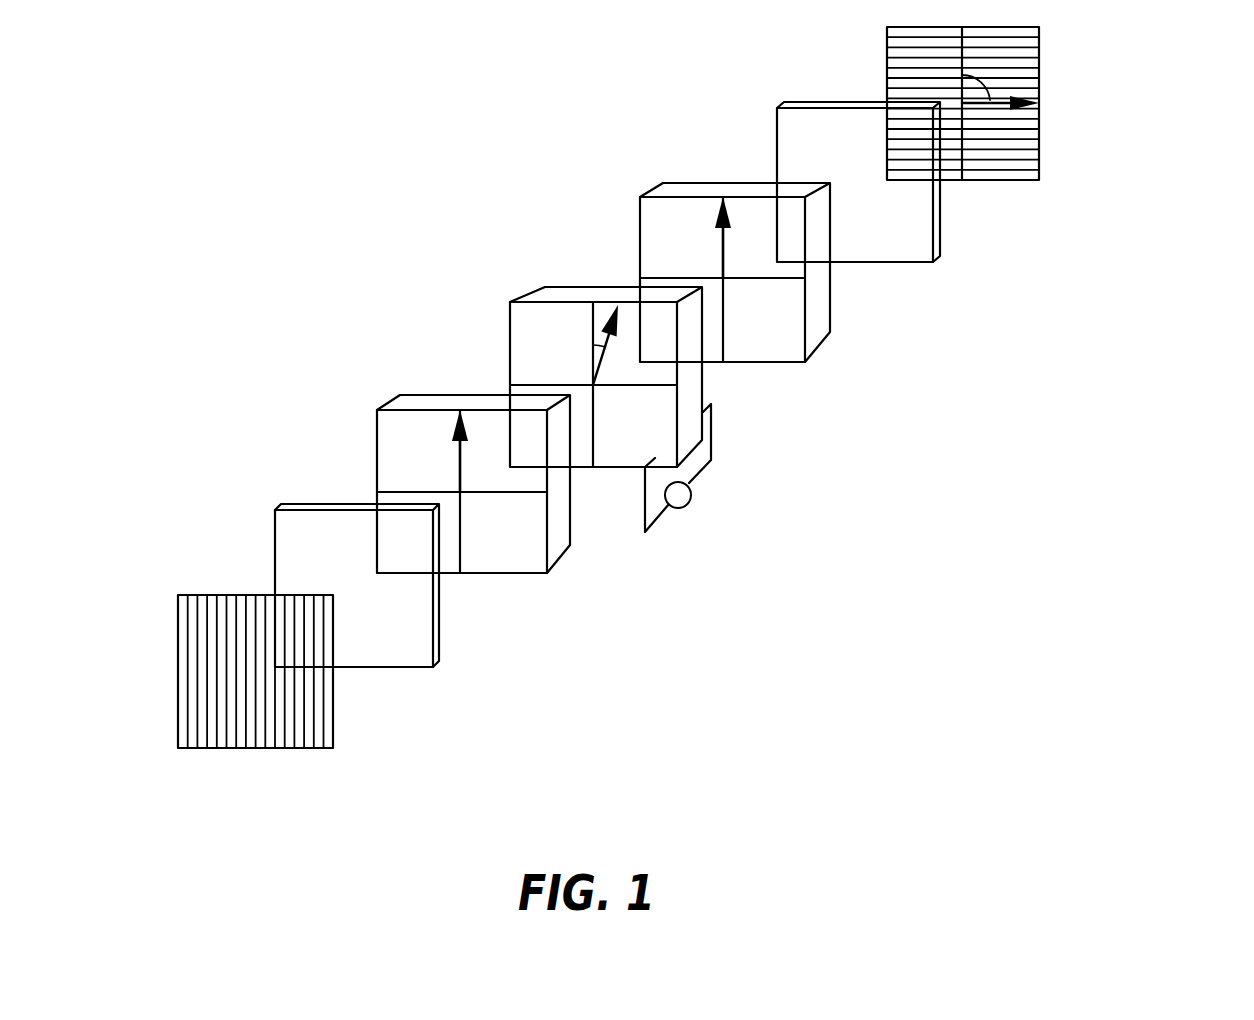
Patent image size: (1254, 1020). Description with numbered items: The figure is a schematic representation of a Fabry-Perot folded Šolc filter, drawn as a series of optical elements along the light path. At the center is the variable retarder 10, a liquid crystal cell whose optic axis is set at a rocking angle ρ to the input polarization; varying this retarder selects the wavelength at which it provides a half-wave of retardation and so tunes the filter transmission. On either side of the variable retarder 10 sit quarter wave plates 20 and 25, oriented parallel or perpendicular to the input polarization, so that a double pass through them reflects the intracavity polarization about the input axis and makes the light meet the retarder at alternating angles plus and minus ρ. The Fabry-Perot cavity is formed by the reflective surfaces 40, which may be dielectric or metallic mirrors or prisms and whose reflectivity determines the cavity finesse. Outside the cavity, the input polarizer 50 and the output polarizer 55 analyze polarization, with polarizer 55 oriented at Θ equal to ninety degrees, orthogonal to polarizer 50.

The variable retarder 10 is at (693, 377).
The quarter wave plate 20 is at (557, 518).
The quarter wave plate 25 is at (820, 288).
The reflective surface 40 is at (436, 618).
The polarizer 50 is at (333, 690).
The polarizer 55 is at (1040, 128).